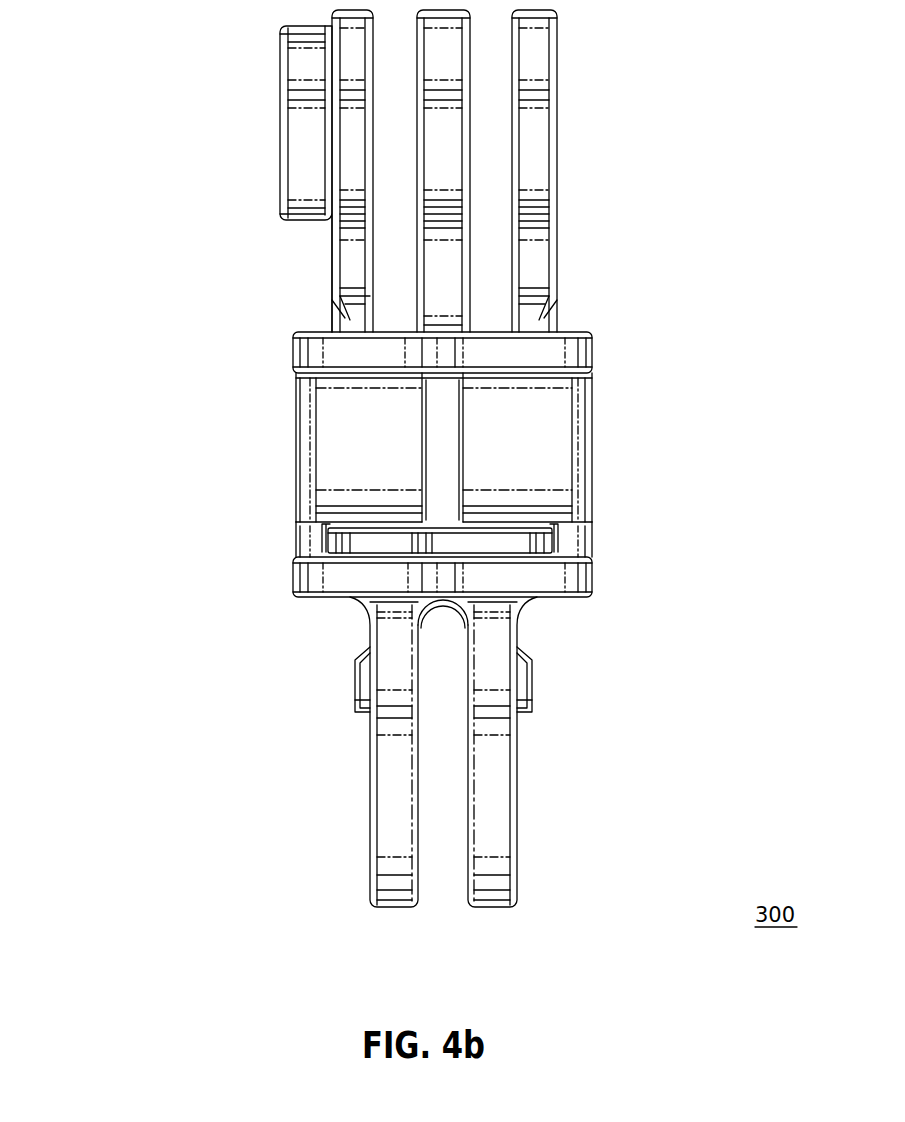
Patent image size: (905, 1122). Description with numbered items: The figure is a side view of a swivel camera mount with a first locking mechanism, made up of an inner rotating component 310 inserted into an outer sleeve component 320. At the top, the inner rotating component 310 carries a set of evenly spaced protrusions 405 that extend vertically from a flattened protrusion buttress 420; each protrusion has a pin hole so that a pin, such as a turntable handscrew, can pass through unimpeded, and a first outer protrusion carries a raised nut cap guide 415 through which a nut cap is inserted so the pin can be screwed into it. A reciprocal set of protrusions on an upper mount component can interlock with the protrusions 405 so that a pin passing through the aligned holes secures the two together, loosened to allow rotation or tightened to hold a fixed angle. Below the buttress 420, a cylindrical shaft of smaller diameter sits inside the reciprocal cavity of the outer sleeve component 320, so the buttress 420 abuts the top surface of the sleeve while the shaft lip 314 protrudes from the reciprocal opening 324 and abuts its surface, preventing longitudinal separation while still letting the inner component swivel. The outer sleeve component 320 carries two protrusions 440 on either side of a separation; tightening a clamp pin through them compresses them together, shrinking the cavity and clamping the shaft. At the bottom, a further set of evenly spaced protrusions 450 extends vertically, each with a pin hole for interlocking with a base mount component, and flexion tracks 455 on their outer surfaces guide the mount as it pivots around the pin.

The inner rotating component 310 is at (295, 282).
The shaft lip 314 is at (450, 514).
The outer sleeve component 320 is at (280, 572).
The reciprocal opening 324 is at (555, 543).
The protrusions 405 is at (543, 100).
The raised nut cap guide 415 is at (290, 108).
The protrusion buttress 420 is at (568, 340).
The protrusions 440 is at (488, 433).
The protrusions 450 is at (503, 832).
The flexion tracks 455 is at (527, 697).